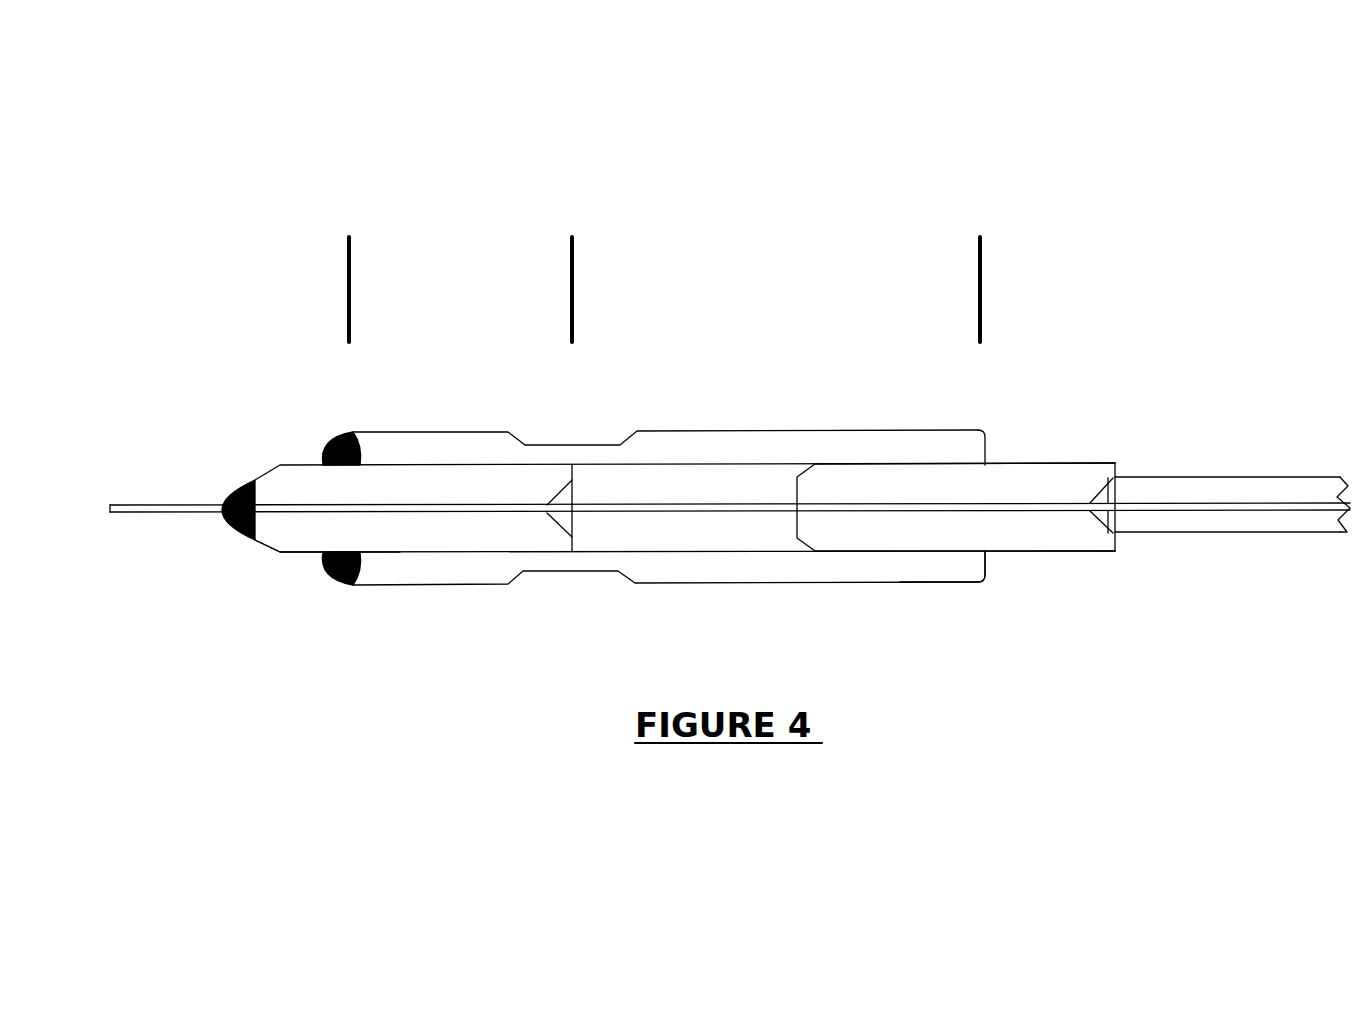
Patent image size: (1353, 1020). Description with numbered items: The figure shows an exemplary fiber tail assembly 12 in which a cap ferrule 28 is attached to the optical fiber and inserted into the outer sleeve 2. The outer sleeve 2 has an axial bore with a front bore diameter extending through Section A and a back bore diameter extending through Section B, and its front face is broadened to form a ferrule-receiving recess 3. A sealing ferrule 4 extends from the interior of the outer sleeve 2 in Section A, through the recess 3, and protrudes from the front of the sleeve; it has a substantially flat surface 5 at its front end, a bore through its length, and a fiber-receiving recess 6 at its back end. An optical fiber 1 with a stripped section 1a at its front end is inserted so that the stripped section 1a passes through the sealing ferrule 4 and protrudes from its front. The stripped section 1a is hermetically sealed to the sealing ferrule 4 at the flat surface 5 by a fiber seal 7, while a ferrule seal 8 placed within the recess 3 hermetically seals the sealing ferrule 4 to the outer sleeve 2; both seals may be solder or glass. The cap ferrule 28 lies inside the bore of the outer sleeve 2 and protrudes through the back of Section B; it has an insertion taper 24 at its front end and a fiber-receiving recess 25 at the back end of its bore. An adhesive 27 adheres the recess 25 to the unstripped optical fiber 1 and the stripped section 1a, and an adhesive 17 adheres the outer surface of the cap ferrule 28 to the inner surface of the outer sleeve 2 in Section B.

The optical fiber 1 is at (1240, 493).
The stripped section 1a is at (133, 502).
The outer sleeve 2 is at (495, 572).
The ferrule-receiving recess 3 is at (357, 568).
The sealing ferrule 4 is at (278, 530).
The flat surface 5 is at (253, 483).
The fiber-receiving recess 6 is at (557, 523).
The fiber seal 7 is at (238, 487).
The ferrule seal 8 is at (333, 443).
The fiber tail assembly 12 is at (1244, 159).
The adhesive 17 is at (918, 551).
The insertion taper 24 is at (805, 468).
The fiber-receiving recess 25 is at (1100, 518).
The adhesive 27 is at (1107, 493).
The cap ferrule 28 is at (1008, 483).